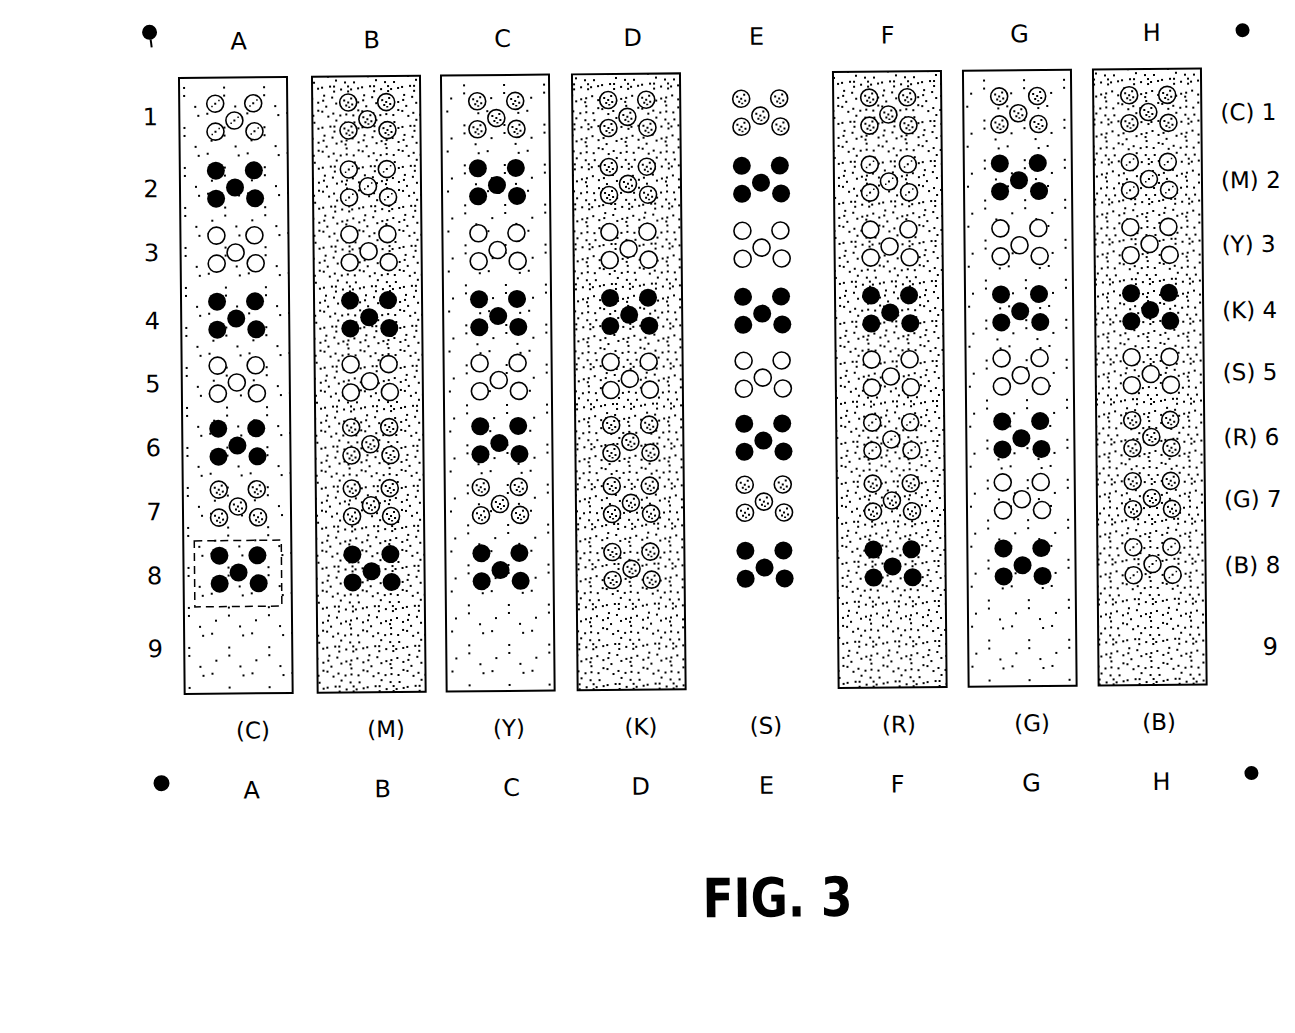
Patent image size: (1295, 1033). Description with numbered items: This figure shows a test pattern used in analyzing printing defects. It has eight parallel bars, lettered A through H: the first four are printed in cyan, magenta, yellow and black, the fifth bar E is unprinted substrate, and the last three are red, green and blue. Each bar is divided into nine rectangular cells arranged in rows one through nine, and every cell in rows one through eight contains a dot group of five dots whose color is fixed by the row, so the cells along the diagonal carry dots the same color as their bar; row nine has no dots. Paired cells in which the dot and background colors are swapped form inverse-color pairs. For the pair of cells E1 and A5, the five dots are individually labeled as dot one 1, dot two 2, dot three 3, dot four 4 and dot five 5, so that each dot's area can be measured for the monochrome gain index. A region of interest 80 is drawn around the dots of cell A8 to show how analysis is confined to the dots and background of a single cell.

The dot one 1 is at (207, 366).
The dot two 2 is at (260, 365).
The dot three 3 is at (234, 392).
The dot four 4 is at (206, 394).
The dot five 5 is at (262, 395).
The region of interest 80 is at (247, 607).